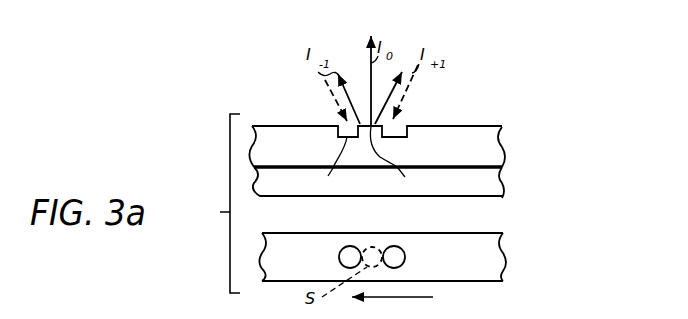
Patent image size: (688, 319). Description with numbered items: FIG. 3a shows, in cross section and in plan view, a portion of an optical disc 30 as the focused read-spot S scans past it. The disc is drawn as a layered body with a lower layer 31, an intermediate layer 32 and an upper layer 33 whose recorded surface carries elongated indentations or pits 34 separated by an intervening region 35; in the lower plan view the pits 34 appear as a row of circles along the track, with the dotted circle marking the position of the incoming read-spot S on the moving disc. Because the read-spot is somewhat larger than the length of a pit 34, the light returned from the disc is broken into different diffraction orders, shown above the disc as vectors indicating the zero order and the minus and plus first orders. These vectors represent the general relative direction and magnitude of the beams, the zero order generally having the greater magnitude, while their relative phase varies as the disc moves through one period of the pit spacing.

The record carrier 30 is at (415, 143).
The substrate 31 is at (493, 188).
The reflective information layer 32 is at (493, 170).
The transparent layer 33 is at (493, 142).
The pits 34 is at (427, 252).
The intermediate area 35 is at (400, 160).